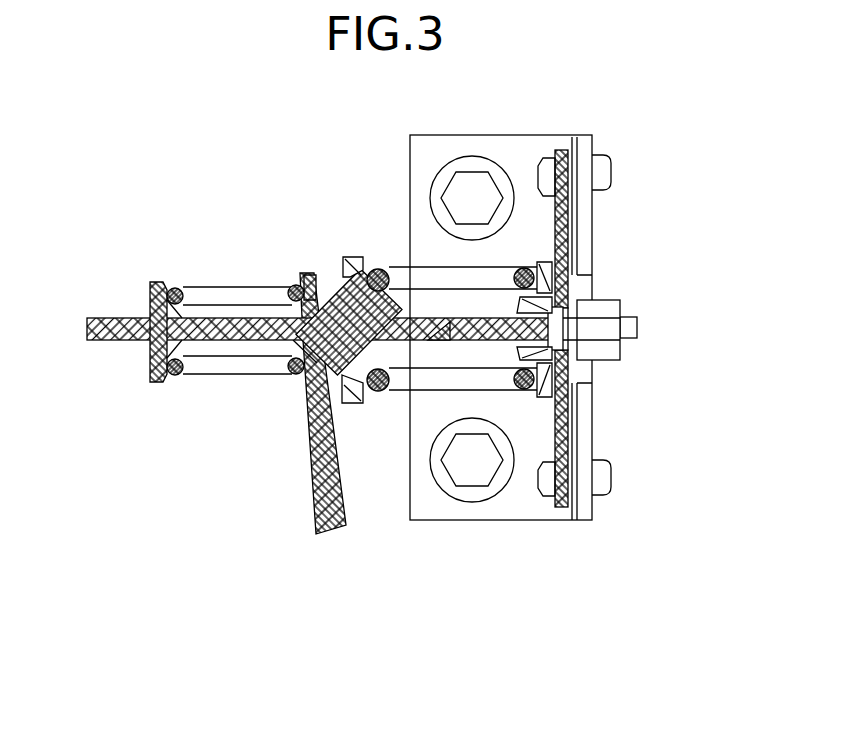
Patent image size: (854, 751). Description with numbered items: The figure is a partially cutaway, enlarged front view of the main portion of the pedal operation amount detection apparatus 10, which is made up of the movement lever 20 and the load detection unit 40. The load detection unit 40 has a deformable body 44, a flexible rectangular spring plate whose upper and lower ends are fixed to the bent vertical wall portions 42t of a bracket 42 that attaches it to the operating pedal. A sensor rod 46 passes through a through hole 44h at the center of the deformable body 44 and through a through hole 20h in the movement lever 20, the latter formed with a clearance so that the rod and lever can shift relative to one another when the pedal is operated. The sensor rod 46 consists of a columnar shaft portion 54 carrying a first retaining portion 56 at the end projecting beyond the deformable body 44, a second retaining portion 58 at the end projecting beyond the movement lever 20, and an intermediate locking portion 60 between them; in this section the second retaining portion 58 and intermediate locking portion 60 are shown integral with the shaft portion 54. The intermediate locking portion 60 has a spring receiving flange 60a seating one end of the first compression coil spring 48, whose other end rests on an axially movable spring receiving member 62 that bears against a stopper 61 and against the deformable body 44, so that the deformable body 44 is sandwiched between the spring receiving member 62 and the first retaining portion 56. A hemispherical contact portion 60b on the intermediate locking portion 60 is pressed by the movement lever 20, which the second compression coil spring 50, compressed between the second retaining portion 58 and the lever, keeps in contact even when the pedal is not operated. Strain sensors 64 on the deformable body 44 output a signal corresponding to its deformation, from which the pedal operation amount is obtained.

The pedal operation amount detection apparatus 10 is at (155, 132).
The movement lever 20 is at (323, 503).
The through hole 20h is at (290, 343).
The load detection unit 40 is at (678, 180).
The bracket 42 is at (432, 157).
The vertical wall portions 42t is at (583, 215).
The deformable body 44 is at (568, 432).
The through hole 44h is at (640, 322).
The sensor rod 46 is at (125, 373).
The first compression coil spring 48 is at (378, 268).
The second compression coil spring 50 is at (177, 380).
The shaft portion 54 is at (238, 330).
The first retaining portion 56 is at (578, 358).
The second retaining portion 58 is at (150, 308).
The intermediate locking portion 60 is at (338, 245).
The spring receiving flange 60a is at (352, 392).
The contact portion 60b is at (332, 288).
The stopper 61 is at (623, 340).
The spring receiving member 62 is at (567, 280).
The strain sensors 64 is at (550, 218).